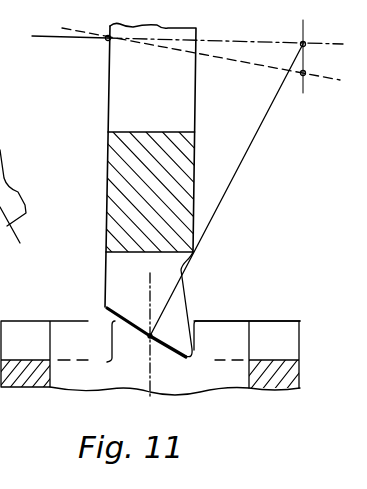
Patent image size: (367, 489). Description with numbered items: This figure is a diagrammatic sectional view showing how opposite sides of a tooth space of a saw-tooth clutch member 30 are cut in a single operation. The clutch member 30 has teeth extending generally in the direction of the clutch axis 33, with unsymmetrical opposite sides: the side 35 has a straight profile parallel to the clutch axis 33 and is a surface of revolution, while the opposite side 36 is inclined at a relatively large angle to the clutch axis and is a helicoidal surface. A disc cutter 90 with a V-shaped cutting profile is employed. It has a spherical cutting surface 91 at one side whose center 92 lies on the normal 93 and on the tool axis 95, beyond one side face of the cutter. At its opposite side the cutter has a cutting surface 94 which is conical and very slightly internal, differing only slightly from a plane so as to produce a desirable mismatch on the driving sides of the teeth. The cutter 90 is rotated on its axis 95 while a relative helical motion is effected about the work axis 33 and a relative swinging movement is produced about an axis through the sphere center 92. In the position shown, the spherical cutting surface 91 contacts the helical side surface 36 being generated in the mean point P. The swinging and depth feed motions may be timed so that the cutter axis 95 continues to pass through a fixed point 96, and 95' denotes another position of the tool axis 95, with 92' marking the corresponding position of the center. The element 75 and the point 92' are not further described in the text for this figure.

The clutch member 30 is at (109, 390).
The clutch axis 33 is at (153, 375).
The straight tooth side 35 is at (194, 321).
The helicoidal tooth side 36 is at (136, 326).
The tool holder 75 is at (2, 150).
The disc cutter 90 is at (181, 182).
The spherical cutting surface 91 is at (107, 316).
The sphere center 92 is at (325, 55).
The alternate pivot point 92' is at (326, 71).
The normal 93 is at (222, 200).
The conical cutting surface 94 is at (195, 289).
The tool axis 95 is at (187, 29).
The another position of the tool axis 95' is at (201, 61).
The fixed point 96 is at (104, 46).
The mean point P is at (146, 343).